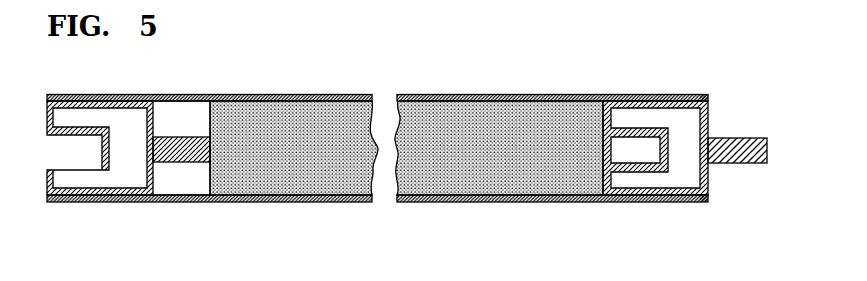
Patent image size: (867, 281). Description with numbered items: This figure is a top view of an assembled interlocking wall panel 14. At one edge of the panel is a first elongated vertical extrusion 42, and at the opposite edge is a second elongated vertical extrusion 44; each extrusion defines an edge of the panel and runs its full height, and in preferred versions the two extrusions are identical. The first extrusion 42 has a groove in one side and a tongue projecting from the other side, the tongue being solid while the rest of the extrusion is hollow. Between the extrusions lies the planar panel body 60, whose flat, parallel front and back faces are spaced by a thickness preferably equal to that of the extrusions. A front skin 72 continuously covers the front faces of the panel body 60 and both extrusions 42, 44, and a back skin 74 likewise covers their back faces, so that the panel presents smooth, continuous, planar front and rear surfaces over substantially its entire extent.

The panel 14 is at (377, 128).
The first elongated vertical extrusion 42 is at (48, 170).
The second elongated vertical extrusion 44 is at (709, 178).
The planar panel body 60 is at (243, 117).
The front skin 72 is at (272, 202).
The back skin 74 is at (487, 95).